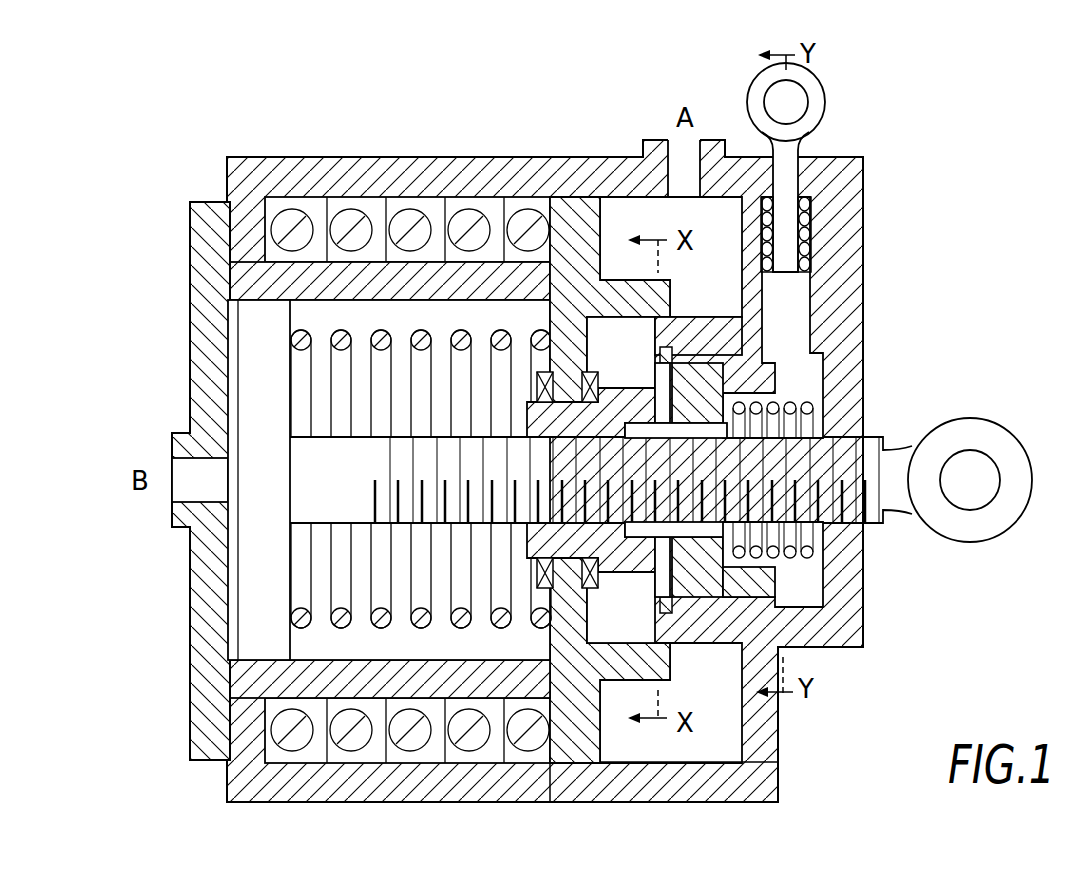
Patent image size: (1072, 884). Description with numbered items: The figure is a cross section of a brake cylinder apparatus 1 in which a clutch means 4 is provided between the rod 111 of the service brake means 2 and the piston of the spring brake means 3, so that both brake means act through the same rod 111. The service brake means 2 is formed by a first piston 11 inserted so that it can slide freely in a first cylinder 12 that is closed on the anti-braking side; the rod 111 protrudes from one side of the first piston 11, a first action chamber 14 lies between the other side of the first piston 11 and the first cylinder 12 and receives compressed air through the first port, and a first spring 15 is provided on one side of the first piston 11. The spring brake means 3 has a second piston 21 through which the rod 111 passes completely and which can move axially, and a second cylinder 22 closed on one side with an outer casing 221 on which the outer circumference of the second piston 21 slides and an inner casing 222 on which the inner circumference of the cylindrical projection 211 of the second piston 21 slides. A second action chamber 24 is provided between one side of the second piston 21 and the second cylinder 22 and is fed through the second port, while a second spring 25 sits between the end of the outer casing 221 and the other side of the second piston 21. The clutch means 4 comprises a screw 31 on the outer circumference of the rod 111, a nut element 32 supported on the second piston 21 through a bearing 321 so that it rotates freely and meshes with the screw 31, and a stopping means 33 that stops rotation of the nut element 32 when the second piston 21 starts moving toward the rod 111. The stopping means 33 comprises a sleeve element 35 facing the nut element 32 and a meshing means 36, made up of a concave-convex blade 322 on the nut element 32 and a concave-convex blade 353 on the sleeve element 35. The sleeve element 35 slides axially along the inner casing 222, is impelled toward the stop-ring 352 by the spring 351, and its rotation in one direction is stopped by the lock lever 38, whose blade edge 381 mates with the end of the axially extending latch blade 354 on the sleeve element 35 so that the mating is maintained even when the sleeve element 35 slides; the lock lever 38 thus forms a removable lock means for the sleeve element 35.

The brake cylinder apparatus 1 is at (118, 211).
The service brake means 2 is at (140, 118).
The spring brake means 3 is at (345, 828).
The clutch means 4 is at (485, 122).
The first piston 11 is at (255, 313).
The first cylinder 12 is at (285, 270).
The first action chamber 14 is at (207, 305).
The first spring 15 is at (382, 345).
The second piston 21 is at (580, 743).
The second cylinder 22 is at (447, 805).
The second action chamber 24 is at (637, 747).
The second spring 25 is at (397, 745).
The screw 31 is at (452, 437).
The nut element 32 is at (530, 420).
The stopping means 33 is at (636, 364).
The sleeve element 35 is at (730, 584).
The meshing means 36 is at (928, 358).
The lock lever 38 is at (835, 99).
The rod 111 is at (327, 450).
The cylindrical projection 211 is at (672, 668).
The outer casing 221 is at (737, 787).
The inner casing 222 is at (725, 628).
The bearing 321 is at (535, 572).
The concave-convex blade 322 is at (652, 410).
The spring 351 is at (798, 568).
The stop-ring 352 is at (660, 598).
The concave-convex blade 353 is at (667, 398).
The latch blade 354 is at (741, 365).
The blade edge 381 is at (795, 360).